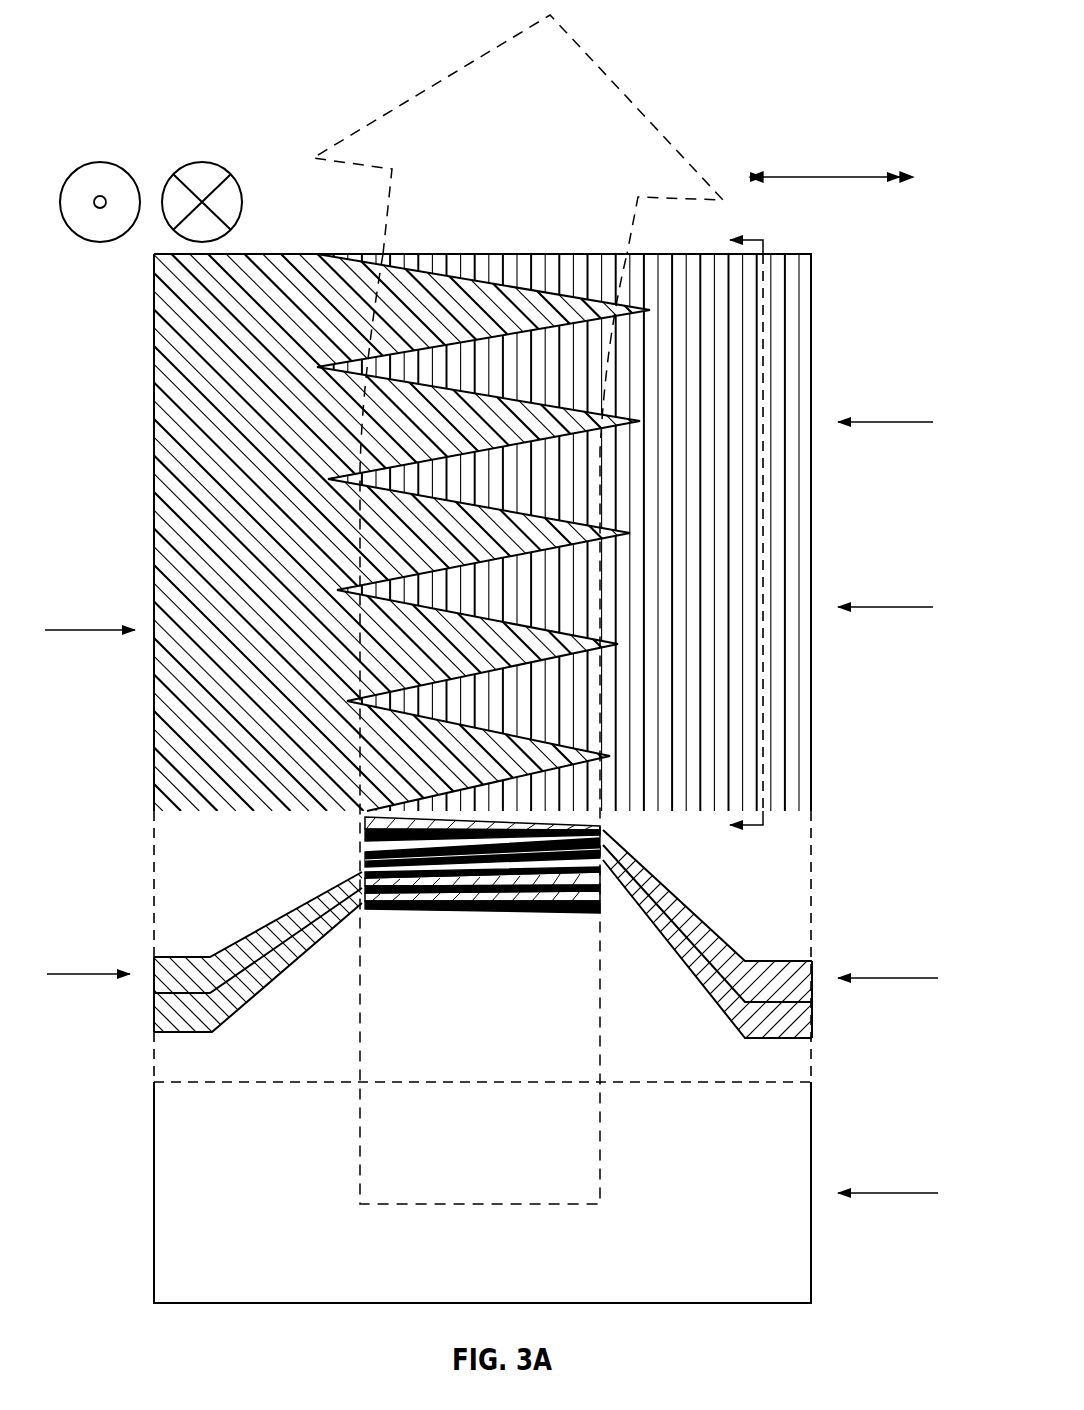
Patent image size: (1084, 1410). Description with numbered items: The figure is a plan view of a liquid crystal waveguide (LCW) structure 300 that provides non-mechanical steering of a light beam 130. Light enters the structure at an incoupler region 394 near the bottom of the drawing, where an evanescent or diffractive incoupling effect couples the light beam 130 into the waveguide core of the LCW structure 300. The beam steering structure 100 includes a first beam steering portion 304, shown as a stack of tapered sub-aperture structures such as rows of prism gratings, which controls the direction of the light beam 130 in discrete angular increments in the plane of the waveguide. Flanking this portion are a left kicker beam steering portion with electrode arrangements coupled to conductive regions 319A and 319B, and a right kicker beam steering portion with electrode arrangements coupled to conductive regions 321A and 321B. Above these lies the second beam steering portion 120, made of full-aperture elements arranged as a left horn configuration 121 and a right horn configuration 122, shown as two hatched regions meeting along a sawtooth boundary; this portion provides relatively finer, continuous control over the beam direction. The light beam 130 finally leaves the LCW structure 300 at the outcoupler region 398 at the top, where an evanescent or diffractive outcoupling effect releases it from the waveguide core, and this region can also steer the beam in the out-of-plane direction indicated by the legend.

The liquid crystal waveguide structure 300 is at (260, 84).
The beam steering structure 100 is at (154, 562).
The left horn configuration 121 is at (165, 430).
The right horn configuration 122 is at (803, 497).
The light beam 130 is at (648, 125).
The outcoupler region 398 is at (811, 335).
The second beam steering portion 120 is at (811, 682).
The first beam steering portion 304 is at (811, 860).
The conductive region 319A is at (158, 1018).
The conductive region 319B is at (158, 985).
The conductive region 321A is at (807, 1025).
The conductive region 321B is at (807, 988).
The incoupler region 394 is at (812, 1218).